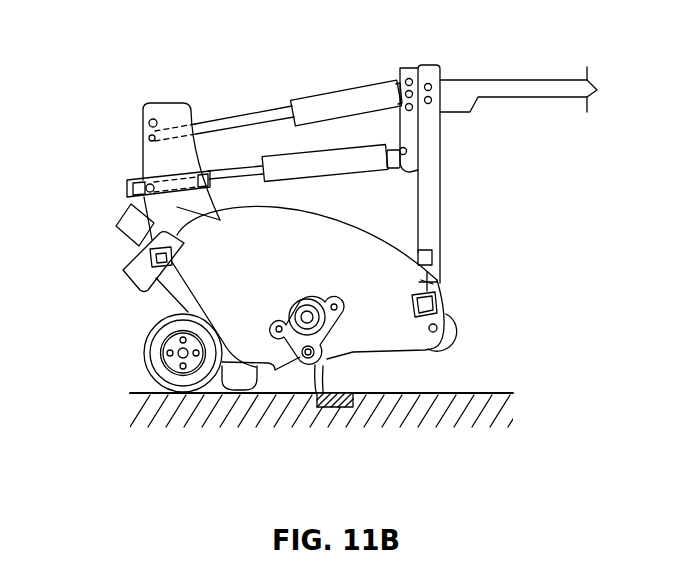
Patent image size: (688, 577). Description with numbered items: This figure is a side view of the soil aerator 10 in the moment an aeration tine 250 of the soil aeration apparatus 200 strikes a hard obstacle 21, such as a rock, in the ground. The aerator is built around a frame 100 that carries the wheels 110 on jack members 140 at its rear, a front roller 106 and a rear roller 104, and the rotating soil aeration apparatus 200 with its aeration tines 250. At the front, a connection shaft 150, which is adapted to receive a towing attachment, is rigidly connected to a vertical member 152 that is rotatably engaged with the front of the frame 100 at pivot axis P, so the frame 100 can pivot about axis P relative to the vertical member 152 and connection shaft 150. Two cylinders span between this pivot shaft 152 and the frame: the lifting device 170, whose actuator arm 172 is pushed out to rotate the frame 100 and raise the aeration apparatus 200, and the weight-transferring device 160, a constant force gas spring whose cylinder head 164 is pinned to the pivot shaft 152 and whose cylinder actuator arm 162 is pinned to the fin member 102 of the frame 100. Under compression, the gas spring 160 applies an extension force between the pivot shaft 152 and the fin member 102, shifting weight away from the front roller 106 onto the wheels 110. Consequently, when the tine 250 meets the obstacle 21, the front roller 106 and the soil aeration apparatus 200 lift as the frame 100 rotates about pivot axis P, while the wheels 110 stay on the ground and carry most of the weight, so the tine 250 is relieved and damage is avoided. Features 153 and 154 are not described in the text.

The soil aerator 10 is at (229, 41).
The hard obstacle 21 is at (342, 408).
The frame 100 is at (352, 266).
The fin member 102 is at (163, 107).
The rear roller 104 is at (207, 397).
The front roller 106 is at (452, 333).
The wheel 110 is at (147, 325).
The jack member 140 is at (133, 232).
The connection shaft 150 is at (528, 84).
The vertical member 152 is at (432, 198).
The mounting plate holes 153 is at (402, 92).
The pivot pin 154 is at (408, 160).
The weight-transferring device 160 is at (295, 97).
The cylinder actuator arm 162 is at (155, 134).
The cylinder head 164 is at (382, 95).
The lifting device 170 is at (290, 164).
The actuator arm 172 is at (130, 184).
The soil aeration apparatus 200 is at (339, 355).
The aeration tine 250 is at (305, 382).
The pivot axis P is at (432, 280).